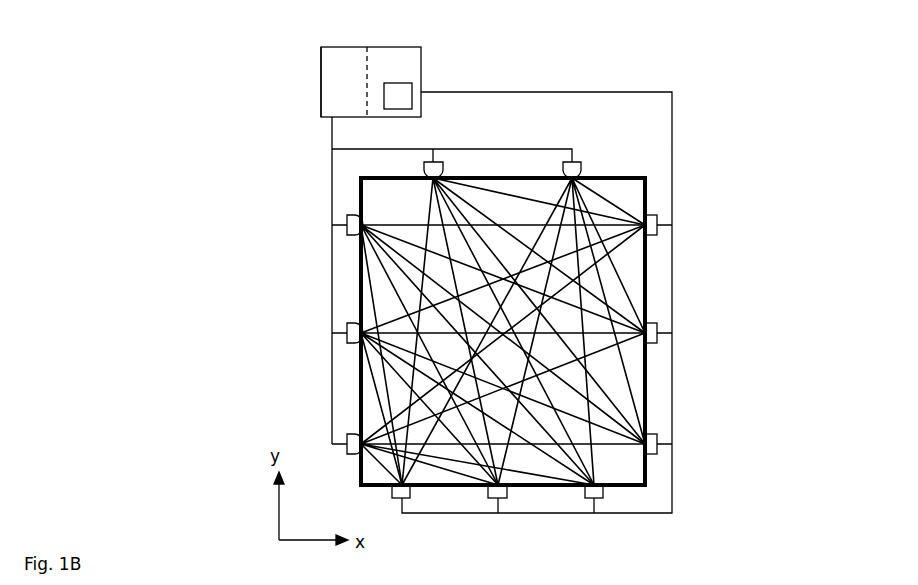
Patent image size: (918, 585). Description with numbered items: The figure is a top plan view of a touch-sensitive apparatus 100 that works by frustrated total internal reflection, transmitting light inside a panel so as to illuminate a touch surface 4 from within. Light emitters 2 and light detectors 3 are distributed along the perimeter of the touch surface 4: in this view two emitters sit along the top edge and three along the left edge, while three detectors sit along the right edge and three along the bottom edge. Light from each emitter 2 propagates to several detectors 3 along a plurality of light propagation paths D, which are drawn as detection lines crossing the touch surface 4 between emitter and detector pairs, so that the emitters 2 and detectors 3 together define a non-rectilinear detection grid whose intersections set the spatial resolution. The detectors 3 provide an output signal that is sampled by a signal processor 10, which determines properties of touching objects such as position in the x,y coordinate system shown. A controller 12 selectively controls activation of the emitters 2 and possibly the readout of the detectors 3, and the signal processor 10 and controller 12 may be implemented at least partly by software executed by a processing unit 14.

The touch-sensitive apparatus 100 is at (728, 100).
The signal processor 10 is at (388, 58).
The controller 12 is at (321, 65).
The processing unit 14 is at (405, 83).
The light emitters 2 is at (433, 162).
The light detectors 3 is at (657, 444).
The touch surface 4 is at (387, 207).
The light propagation paths D is at (588, 203).